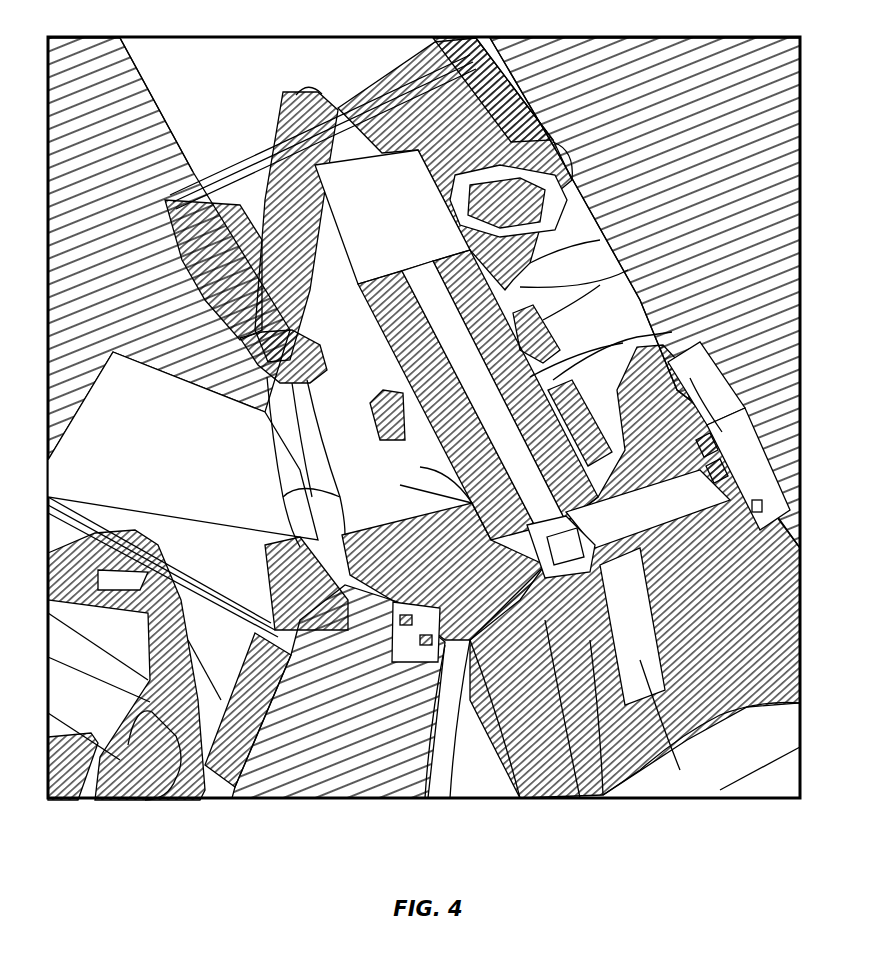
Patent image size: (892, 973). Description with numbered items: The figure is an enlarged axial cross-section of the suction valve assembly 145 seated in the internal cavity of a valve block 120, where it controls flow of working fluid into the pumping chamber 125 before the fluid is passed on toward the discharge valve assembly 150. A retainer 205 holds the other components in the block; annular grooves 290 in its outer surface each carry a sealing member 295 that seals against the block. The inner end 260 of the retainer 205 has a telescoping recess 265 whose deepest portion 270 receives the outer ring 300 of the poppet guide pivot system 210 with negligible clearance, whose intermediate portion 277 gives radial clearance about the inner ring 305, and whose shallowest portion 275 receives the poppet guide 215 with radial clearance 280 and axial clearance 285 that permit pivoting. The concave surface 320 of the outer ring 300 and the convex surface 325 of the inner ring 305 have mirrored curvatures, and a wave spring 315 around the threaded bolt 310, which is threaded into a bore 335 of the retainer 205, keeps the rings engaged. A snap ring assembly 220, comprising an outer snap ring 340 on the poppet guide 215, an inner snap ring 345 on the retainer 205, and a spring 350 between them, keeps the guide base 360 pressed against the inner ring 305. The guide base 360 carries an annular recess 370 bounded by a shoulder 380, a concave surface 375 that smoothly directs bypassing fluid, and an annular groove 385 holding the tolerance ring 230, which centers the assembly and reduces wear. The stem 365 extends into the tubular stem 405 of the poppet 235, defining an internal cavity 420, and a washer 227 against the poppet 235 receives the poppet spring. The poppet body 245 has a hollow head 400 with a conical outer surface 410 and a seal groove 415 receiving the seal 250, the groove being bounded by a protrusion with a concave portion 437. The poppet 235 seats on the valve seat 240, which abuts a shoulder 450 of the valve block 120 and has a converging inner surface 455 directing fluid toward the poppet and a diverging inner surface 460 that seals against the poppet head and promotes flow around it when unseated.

The valve block 120 is at (717, 99).
The pumping chamber 125 is at (177, 465).
The suction valve assembly 145 is at (627, 221).
The discharge valve assembly 150 is at (248, 770).
The retainer 205 is at (719, 658).
The poppet guide pivot system 210 is at (600, 745).
The poppet guide 215 is at (418, 571).
The snap ring assembly 220 is at (728, 416).
The washer 227 is at (420, 468).
The tolerance ring 230 is at (695, 360).
The poppet 235 is at (610, 241).
The valve seat 240 is at (503, 113).
The poppet body 245 is at (425, 110).
The seal 250 is at (578, 162).
The inner end 260 is at (737, 460).
The telescoping recess 265 is at (721, 520).
The deepest portion 270 is at (487, 767).
The shallowest portion 275 is at (400, 688).
The intermediate portion 277 is at (432, 760).
The radial clearance 280 is at (403, 648).
The axial clearance 285 is at (460, 735).
The annular groove 290 is at (750, 518).
The sealing member 295 is at (767, 500).
The outer ring 300 is at (628, 618).
The inner ring 305 is at (698, 574).
The threaded bolt 310 is at (584, 623).
The wave spring 315 is at (662, 765).
The concave surface 320 is at (557, 672).
The convex surface 325 is at (480, 640).
The bore 335 is at (710, 770).
The outer snap ring 340 is at (670, 500).
The inner snap ring 345 is at (692, 447).
The spring 350 is at (698, 473).
The guide base 360 is at (710, 382).
The stem 365 is at (668, 296).
The annular recess 370 is at (460, 625).
The concave surface 375 is at (300, 548).
The shoulder 380 is at (612, 418).
The annular groove 385 is at (717, 310).
The hollow head 400 is at (428, 165).
The tubular stem 405 is at (640, 262).
The outer surface 410 is at (203, 270).
The seal groove 415 is at (598, 186).
The internal cavity 420 is at (360, 247).
The concave portion 437 is at (227, 400).
The shoulder 450 is at (187, 182).
The converging inner surface 455 is at (193, 238).
The diverging inner surface 460 is at (230, 318).